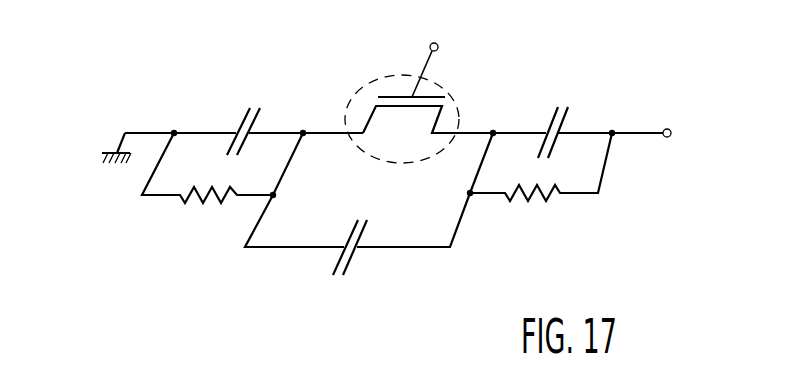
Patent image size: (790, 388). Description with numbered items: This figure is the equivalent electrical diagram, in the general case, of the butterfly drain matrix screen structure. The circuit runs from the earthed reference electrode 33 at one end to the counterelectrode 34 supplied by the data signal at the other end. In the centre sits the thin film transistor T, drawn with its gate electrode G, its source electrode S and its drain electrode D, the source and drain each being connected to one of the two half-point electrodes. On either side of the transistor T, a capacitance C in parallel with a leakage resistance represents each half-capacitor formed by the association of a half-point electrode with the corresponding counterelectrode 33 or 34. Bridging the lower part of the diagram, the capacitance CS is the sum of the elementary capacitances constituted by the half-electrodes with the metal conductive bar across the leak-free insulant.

The earthed reference electrode 33 is at (133, 133).
The counterelectrode supplied by the data signal 34 is at (656, 130).
The capacitance C is at (243, 108).
The thin film transistor T is at (398, 109).
The gate electrode G is at (436, 58).
The source electrode S is at (342, 135).
The drain electrode D is at (458, 137).
The capacitance CS is at (355, 257).